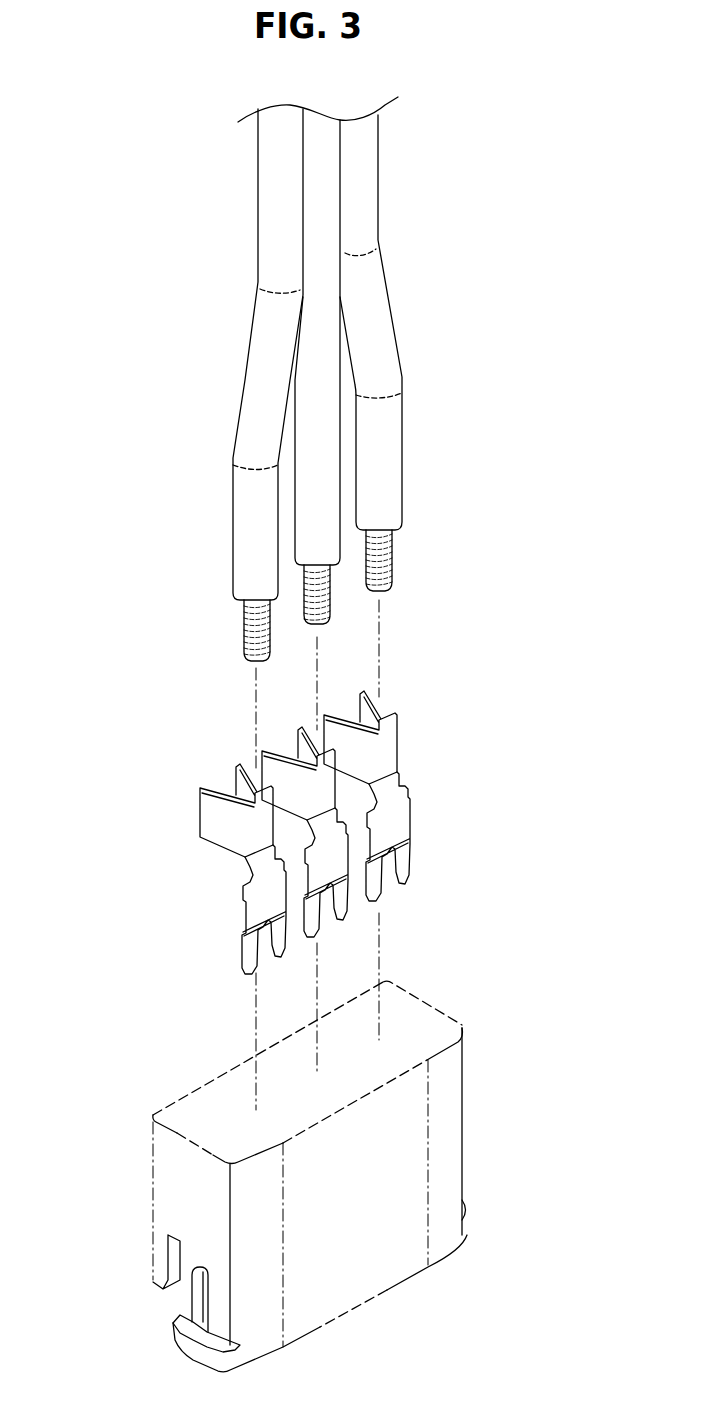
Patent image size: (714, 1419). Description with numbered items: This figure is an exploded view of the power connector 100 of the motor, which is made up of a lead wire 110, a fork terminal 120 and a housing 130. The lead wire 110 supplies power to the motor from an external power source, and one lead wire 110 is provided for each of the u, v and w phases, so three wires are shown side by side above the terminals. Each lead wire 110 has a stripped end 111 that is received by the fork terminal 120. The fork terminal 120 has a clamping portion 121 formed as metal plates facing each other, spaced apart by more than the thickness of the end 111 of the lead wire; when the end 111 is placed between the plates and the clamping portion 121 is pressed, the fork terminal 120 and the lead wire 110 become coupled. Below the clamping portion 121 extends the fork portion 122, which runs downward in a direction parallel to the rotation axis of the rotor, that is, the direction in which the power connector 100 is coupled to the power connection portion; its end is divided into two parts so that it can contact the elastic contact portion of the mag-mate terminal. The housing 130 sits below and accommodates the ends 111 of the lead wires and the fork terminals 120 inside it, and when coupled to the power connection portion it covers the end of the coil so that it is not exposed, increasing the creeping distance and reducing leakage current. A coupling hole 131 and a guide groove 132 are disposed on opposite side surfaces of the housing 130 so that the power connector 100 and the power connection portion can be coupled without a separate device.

The power connector 100 is at (141, 422).
The lead wire 110 is at (394, 452).
The end of the lead wire 111 is at (394, 556).
The fork terminal 120 is at (423, 733).
The clamping portion 121 is at (388, 757).
The fork portion 122 is at (388, 824).
The housing 130 is at (490, 1118).
The coupling hole 131 is at (197, 1298).
The guide groove 132 is at (173, 1260).